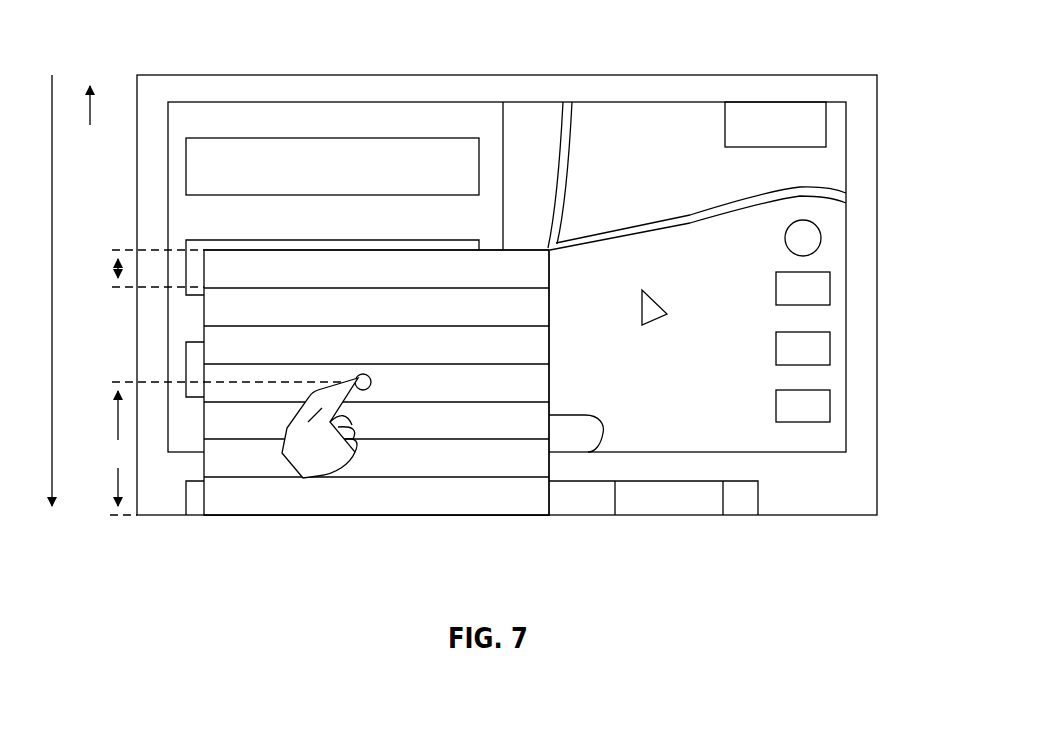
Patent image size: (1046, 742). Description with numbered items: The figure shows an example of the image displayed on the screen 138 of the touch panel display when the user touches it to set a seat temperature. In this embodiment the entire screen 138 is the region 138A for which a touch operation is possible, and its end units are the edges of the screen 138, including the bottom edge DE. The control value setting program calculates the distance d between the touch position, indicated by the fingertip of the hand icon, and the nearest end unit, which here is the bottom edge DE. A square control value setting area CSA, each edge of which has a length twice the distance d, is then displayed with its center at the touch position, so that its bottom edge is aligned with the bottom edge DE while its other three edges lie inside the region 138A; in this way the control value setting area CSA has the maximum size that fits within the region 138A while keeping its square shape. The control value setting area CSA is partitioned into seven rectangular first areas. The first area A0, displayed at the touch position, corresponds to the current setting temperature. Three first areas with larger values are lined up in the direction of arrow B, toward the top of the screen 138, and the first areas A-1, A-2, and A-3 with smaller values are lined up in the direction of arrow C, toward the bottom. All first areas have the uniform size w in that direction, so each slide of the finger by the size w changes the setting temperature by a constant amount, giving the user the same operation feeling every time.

The screen 138 is at (877, 157).
The region 138A is at (645, 127).
The control value setting area CSA is at (490, 243).
The bottom edge DE is at (800, 515).
The first area A0 is at (545, 389).
The first area A-1 is at (538, 425).
The first area A-2 is at (518, 463).
The first area A-3 is at (470, 500).
The size w is at (118, 268).
The distance d is at (233, 448).
The arrow B is at (90, 125).
The arrow C is at (52, 470).